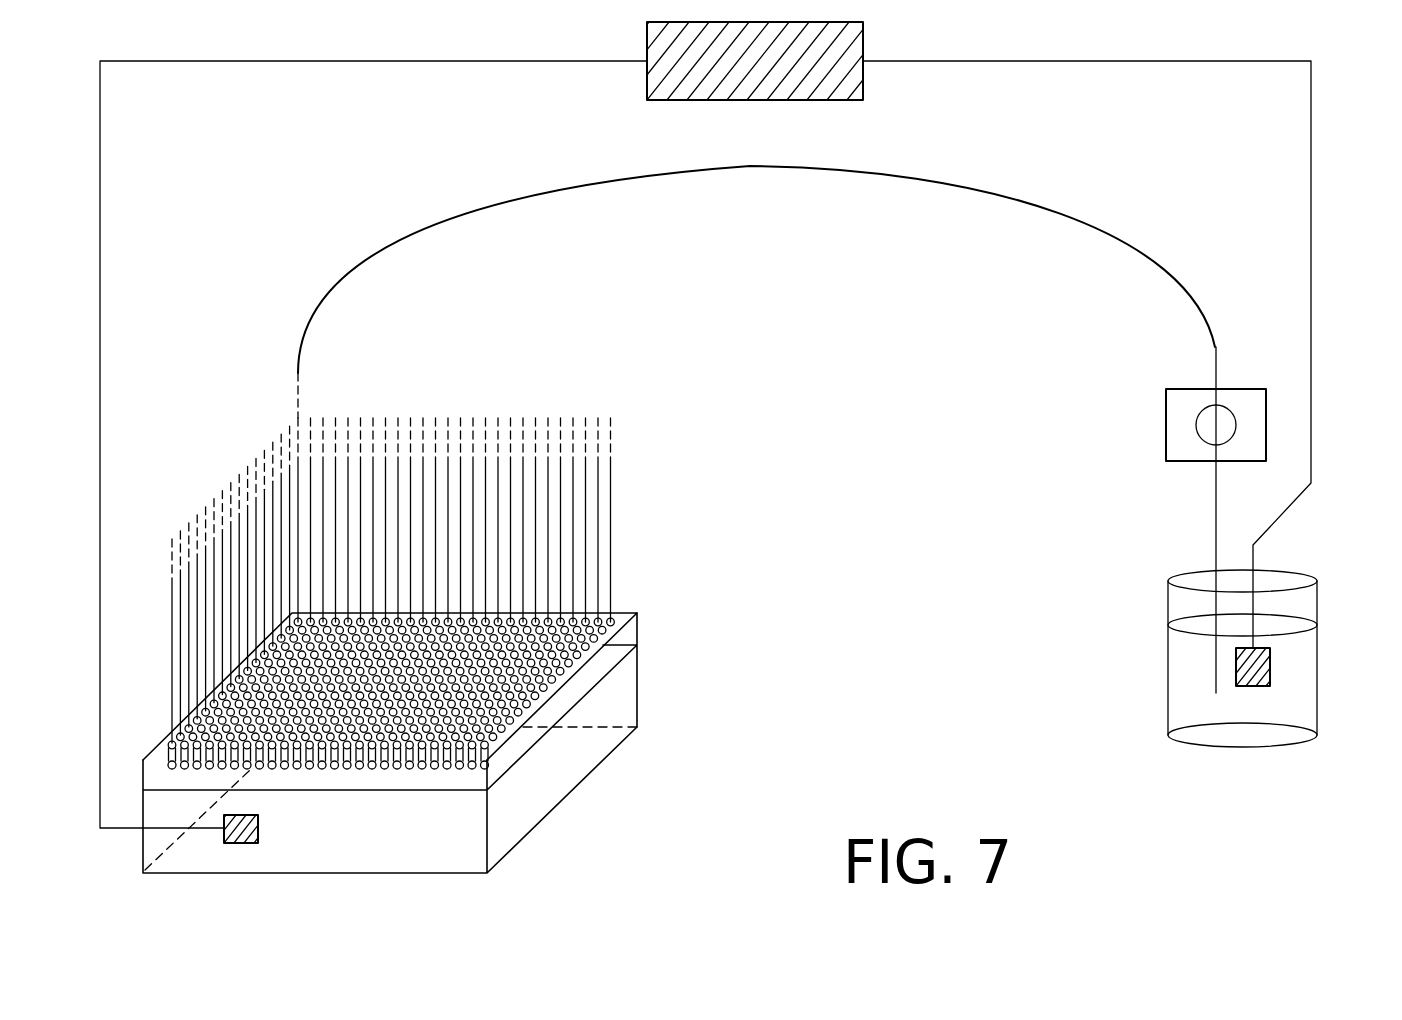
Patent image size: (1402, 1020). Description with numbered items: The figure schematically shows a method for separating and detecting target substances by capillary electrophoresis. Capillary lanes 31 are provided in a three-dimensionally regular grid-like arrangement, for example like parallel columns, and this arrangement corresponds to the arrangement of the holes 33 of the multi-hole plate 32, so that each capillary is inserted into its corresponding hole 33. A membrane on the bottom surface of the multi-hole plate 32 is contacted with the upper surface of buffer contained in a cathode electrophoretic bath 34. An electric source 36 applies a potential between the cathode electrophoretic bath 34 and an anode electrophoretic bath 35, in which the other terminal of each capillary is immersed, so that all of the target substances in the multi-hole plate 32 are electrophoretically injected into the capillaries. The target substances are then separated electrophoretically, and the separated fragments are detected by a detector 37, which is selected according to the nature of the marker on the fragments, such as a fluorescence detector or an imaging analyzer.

The capillary lanes 31 is at (610, 488).
The multi-hole plate 32 is at (627, 633).
The holes 33 is at (503, 742).
The cathode electrophoretic bath 34 is at (460, 840).
The anode electrophoretic bath 35 is at (1303, 667).
The electric source 36 is at (690, 72).
The detector 37 is at (1245, 400).